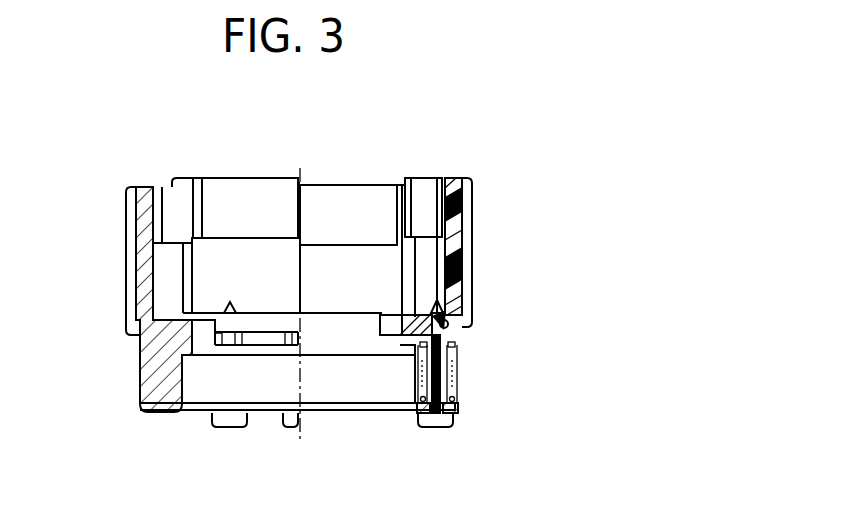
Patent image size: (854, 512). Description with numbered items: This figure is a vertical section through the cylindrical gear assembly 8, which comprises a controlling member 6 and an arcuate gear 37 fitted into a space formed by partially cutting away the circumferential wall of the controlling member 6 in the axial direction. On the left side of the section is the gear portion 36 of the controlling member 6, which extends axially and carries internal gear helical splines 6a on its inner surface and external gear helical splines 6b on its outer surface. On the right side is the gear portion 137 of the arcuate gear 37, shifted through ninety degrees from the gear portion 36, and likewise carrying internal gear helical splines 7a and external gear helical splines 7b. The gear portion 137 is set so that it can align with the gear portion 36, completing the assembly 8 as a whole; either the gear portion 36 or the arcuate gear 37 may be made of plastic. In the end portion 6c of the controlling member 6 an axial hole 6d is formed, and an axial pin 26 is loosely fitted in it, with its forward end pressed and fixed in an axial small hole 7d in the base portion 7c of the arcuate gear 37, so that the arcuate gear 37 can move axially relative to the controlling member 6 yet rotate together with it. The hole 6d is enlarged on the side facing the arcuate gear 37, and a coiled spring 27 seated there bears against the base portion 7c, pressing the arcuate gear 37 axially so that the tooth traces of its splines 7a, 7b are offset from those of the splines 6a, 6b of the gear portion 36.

The controlling member 6 is at (150, 383).
The internal gear helical splines 6a is at (193, 178).
The external gear helical splines 6b is at (130, 280).
The end portion 6c is at (161, 413).
The axial holes 6d is at (458, 341).
The internal gear helical splines 7a is at (440, 178).
The external gear helical splines 7b is at (473, 208).
The base portion 7c is at (398, 320).
The axial small holes 7d is at (446, 322).
The cylindrical gear assembly 8 is at (284, 166).
The axial pin 26 is at (455, 378).
The coiled spring 27 is at (455, 405).
The gear portion 36 is at (347, 185).
The arcuate gear 37 is at (244, 178).
The gear portion 137 is at (456, 178).